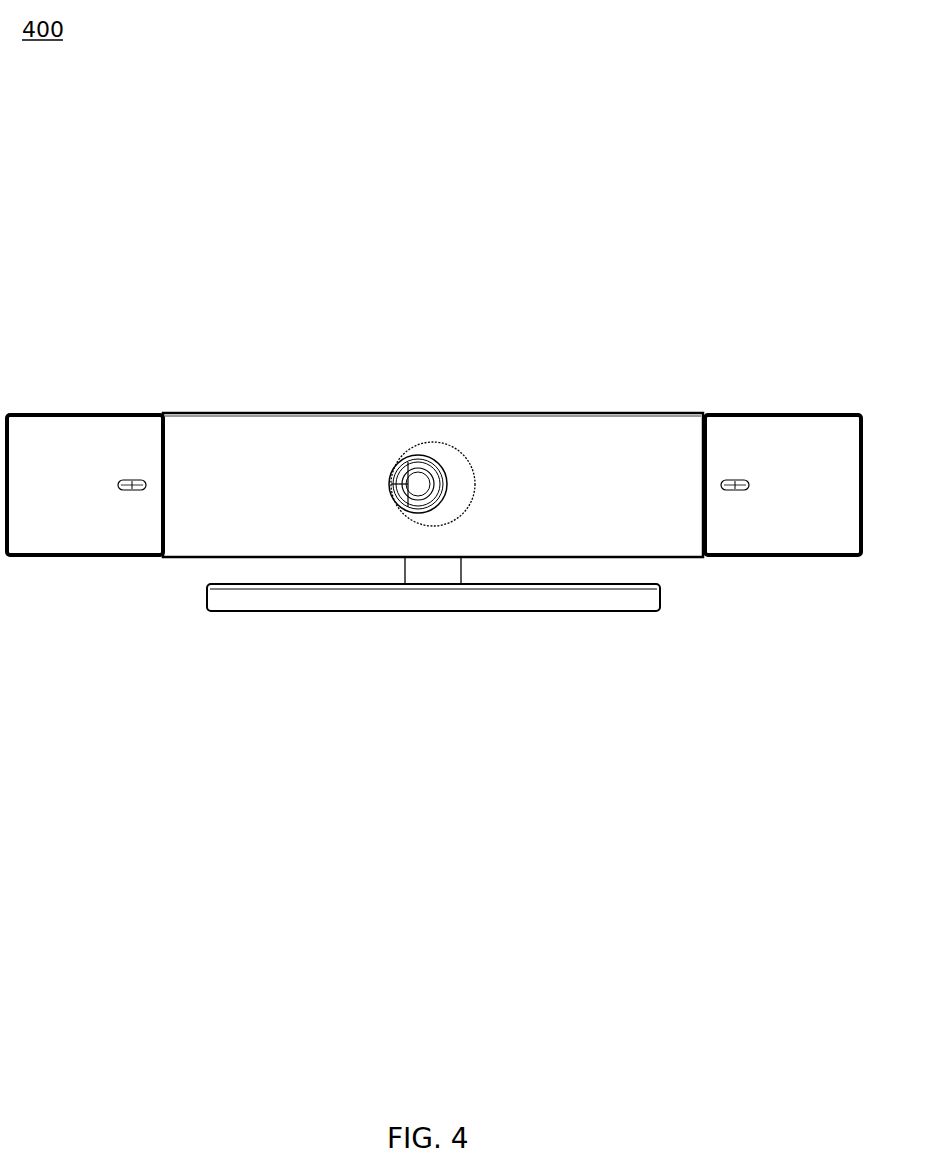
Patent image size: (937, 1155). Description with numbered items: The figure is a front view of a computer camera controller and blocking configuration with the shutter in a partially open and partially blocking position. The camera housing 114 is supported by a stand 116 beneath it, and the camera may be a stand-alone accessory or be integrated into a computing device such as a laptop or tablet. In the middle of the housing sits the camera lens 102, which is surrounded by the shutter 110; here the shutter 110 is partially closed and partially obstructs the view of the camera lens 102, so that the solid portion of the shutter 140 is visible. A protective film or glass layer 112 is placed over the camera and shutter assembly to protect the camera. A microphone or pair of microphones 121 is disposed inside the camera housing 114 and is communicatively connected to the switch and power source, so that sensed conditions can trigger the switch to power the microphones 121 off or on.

The camera lens 102 is at (427, 481).
The shutter 110 is at (411, 459).
The protective film or glass layer 112 is at (557, 410).
The camera housing 114 is at (770, 411).
The stand 116 is at (435, 609).
The microphones 121 is at (126, 481).
The solid portion of the shutter 140 is at (462, 466).